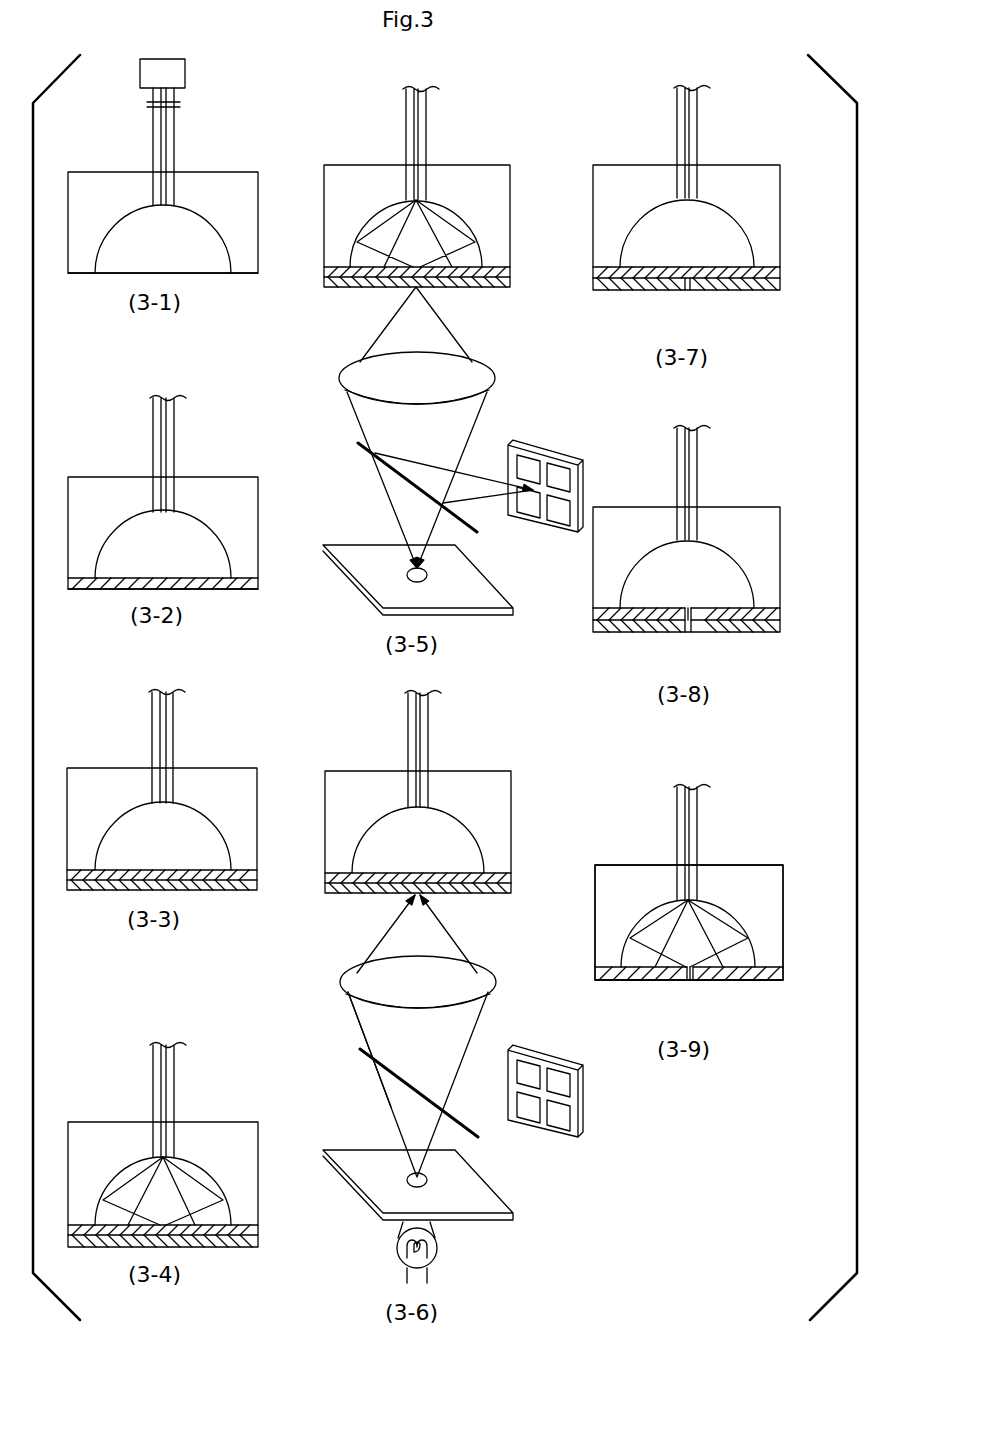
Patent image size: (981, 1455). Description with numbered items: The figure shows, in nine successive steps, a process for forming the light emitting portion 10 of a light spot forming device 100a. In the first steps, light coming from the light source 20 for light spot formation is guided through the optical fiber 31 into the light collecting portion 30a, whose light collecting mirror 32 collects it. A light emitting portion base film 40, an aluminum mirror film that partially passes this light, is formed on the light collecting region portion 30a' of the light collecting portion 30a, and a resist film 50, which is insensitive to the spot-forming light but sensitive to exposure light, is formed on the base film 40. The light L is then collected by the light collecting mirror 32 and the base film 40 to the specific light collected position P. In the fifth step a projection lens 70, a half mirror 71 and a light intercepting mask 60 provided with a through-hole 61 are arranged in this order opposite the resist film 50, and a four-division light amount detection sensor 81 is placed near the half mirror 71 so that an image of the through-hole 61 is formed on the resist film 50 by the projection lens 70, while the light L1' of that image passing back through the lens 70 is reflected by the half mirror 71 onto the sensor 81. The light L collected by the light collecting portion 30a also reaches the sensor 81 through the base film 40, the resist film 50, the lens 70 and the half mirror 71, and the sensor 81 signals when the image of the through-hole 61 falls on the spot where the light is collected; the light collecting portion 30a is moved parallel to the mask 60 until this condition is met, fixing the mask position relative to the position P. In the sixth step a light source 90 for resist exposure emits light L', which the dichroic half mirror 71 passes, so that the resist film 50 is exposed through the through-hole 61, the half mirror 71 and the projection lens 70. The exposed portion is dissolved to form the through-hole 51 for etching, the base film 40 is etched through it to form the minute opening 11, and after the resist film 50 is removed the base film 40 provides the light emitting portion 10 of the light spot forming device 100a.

The light source for light spot formation 20 is at (185, 75).
The optical fiber 31 is at (190, 1085).
The light collecting portion 30a is at (443, 687).
The light collecting region portion 30a' is at (155, 296).
The light collecting mirror 32 is at (203, 1172).
The light emitting portion base film 40 is at (790, 970).
The resist film 50 is at (753, 650).
The through-hole for etching 51 is at (686, 633).
The light emitting portion 10 is at (698, 984).
The minute opening 11 is at (687, 982).
The projection lens 70 is at (417, 1009).
The half mirror 71 is at (413, 1090).
The 4-division light amount detection sensor 81 is at (538, 1050).
The light intercepting mask 60 is at (477, 1174).
The through-hole 61 is at (407, 1177).
The light source for resist exposure 90 is at (437, 1248).
The light spot forming device 100a is at (760, 825).
The light for light spot formation L is at (425, 638).
The light collected position P is at (688, 965).
The light of the image L1' is at (454, 470).
The light for resist exposure L' is at (369, 1055).